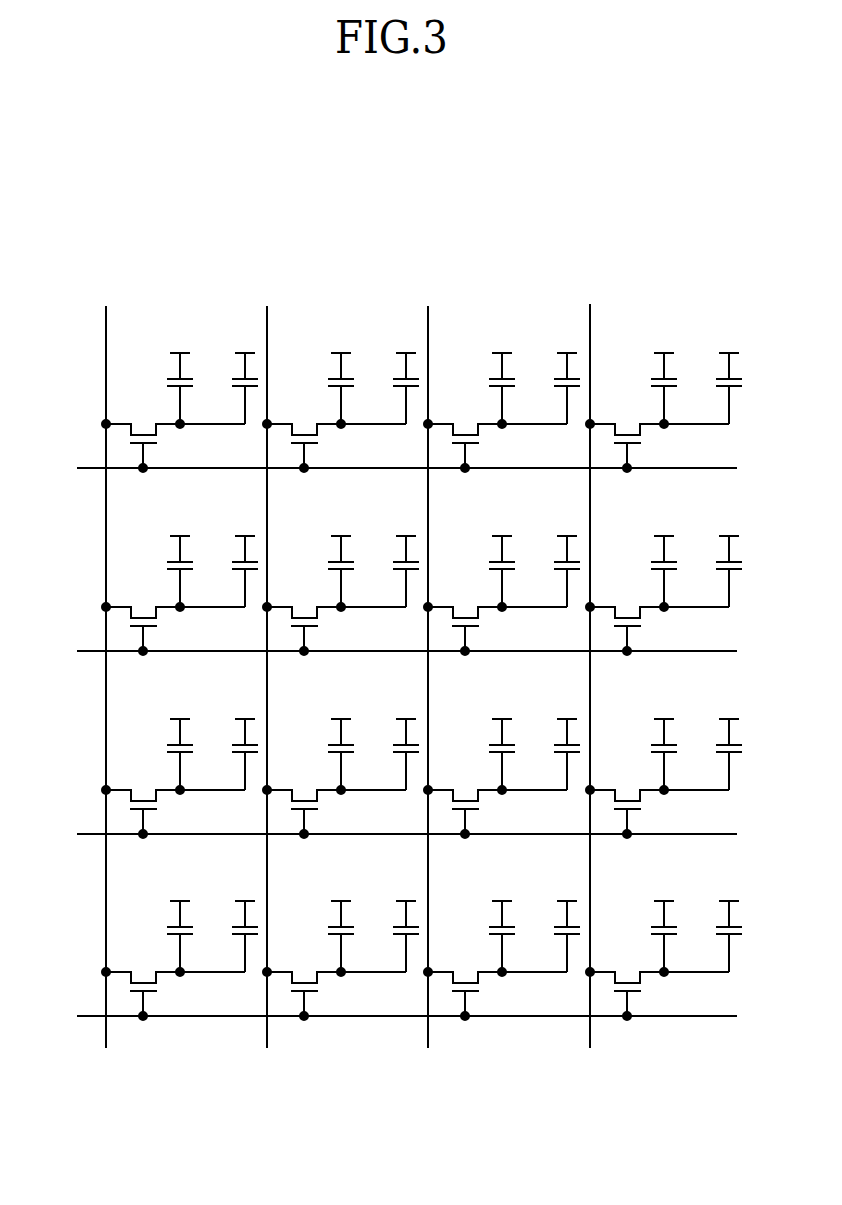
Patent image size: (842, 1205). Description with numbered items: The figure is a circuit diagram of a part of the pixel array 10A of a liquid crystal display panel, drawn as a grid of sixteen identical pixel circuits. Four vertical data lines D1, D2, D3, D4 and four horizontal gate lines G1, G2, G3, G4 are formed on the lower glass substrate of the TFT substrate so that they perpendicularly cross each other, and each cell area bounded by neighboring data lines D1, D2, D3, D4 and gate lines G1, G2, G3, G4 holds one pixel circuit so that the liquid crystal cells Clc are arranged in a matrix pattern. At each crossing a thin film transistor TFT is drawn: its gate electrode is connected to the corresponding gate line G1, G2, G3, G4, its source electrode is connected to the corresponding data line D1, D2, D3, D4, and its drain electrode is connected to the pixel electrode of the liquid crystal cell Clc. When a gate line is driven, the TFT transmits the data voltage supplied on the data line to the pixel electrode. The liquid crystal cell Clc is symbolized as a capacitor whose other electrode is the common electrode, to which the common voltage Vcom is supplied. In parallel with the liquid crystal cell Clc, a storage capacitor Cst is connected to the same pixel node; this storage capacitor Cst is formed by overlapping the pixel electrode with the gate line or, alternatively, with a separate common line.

The pixel array / display panel 10A is at (107, 269).
The data line D1 is at (108, 663).
The data line D2 is at (269, 663).
The data line D3 is at (430, 663).
The data line D4 is at (592, 663).
The gate line G1 is at (391, 469).
The gate line G2 is at (391, 652).
The gate line G3 is at (391, 835).
The gate line G4 is at (391, 1017).
The thin film transistor TFT is at (167, 448).
The liquid crystal cell Clc is at (160, 388).
The storage capacitor Cst is at (227, 388).
The common voltage Vcom is at (189, 340).